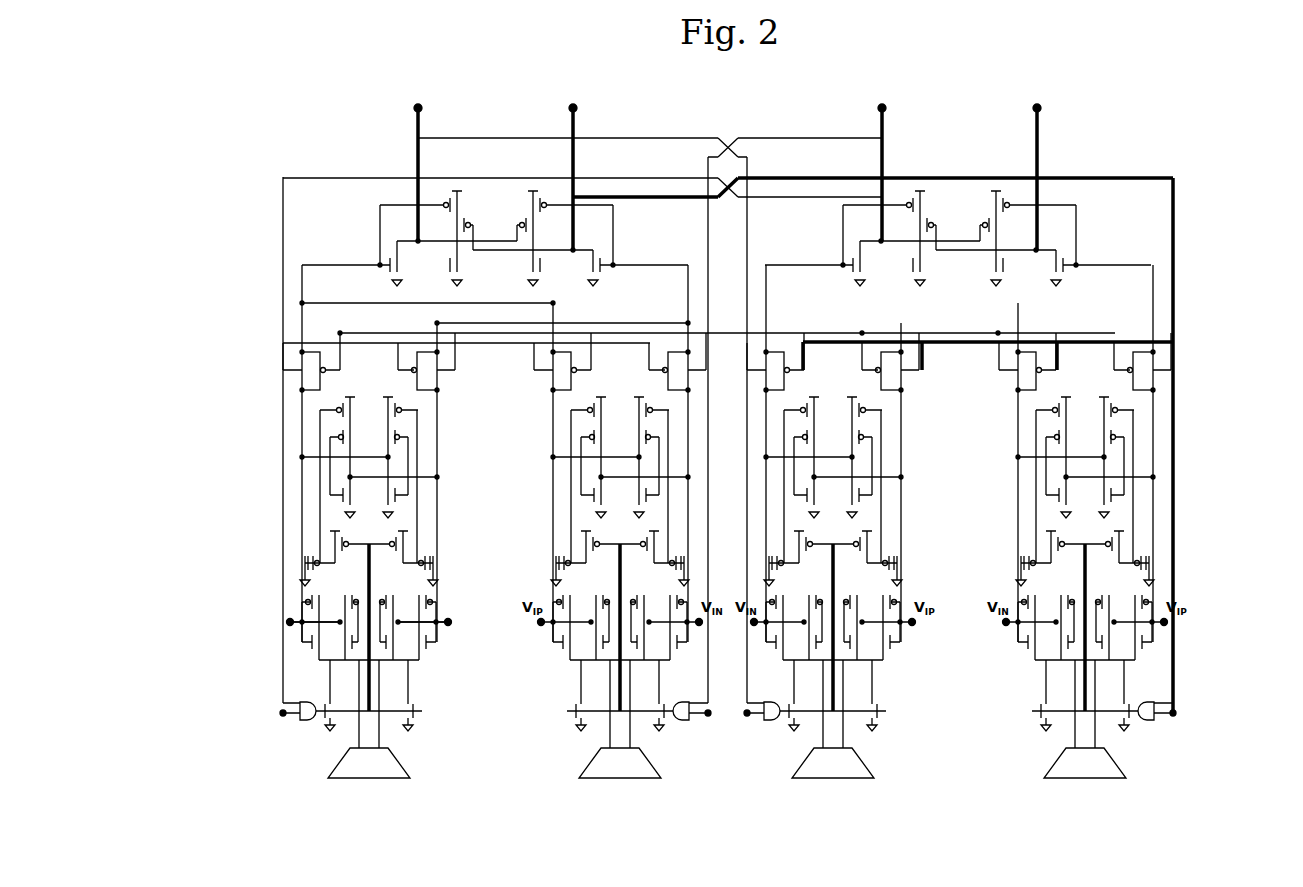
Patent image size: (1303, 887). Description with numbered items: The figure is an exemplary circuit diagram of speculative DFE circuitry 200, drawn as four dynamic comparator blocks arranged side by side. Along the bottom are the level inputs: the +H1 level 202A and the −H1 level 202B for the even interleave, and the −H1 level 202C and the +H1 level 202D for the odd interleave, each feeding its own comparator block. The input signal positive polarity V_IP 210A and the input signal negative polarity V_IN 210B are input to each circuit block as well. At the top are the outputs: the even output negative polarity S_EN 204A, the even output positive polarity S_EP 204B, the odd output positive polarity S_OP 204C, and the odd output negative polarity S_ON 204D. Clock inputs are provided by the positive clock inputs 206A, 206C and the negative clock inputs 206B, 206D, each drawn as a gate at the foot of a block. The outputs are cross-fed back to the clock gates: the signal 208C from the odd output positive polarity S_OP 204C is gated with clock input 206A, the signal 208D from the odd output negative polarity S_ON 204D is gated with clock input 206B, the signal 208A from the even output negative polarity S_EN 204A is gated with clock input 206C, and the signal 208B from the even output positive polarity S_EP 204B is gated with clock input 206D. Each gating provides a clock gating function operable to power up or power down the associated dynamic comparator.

The speculative DFE circuitry 200 is at (318, 160).
The +H1 level input 202A is at (393, 768).
The −H1 level input 202B is at (587, 775).
The −H1 level input 202C is at (860, 768).
The +H1 level input 202D is at (1115, 773).
The even output negative polarity S_EN 204A is at (437, 107).
The even output positive polarity S_EP 204B is at (588, 107).
The odd output positive polarity S_OP 204C is at (925, 107).
The odd output negative polarity S_ON 204D is at (1070, 107).
The positive clock input 206A is at (283, 713).
The negative clock input 206B is at (707, 717).
The positive clock input 206C is at (749, 717).
The negative clock input 206D is at (1174, 716).
The signal from even output negative polarity 208A is at (583, 137).
The signal from even output positive polarity 208B is at (1173, 468).
The signal from odd output positive polarity 208C is at (283, 520).
The signal from odd output negative polarity 208D is at (873, 135).
The input signal positive polarity V_IP 210A is at (283, 622).
The input signal negative polarity V_IN 210B is at (448, 625).